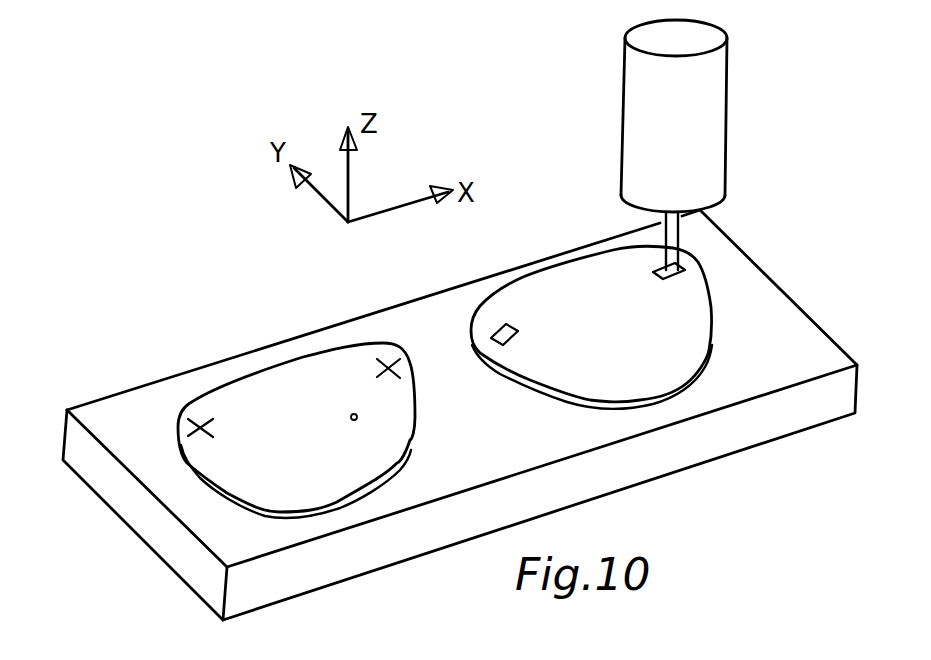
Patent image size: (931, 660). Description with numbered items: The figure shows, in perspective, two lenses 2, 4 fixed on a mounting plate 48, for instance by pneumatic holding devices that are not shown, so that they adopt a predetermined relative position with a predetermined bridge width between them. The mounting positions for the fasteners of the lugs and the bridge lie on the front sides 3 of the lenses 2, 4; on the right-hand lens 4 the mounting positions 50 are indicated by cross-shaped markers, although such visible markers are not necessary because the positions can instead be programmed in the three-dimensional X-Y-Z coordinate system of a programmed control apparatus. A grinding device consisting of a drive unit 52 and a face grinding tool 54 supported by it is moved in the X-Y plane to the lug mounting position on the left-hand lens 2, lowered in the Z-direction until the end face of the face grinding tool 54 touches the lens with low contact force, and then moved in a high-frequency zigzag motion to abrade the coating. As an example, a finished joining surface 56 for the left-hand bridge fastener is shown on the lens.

The lens 2 is at (675, 345).
The front side 3 is at (383, 441).
The lens 4 is at (273, 470).
The mounting plate 48 is at (563, 500).
The mounting positions 50 is at (187, 428).
The drive unit 52 is at (710, 143).
The face grinding tool 54 is at (670, 237).
The joining surface 56 is at (490, 335).